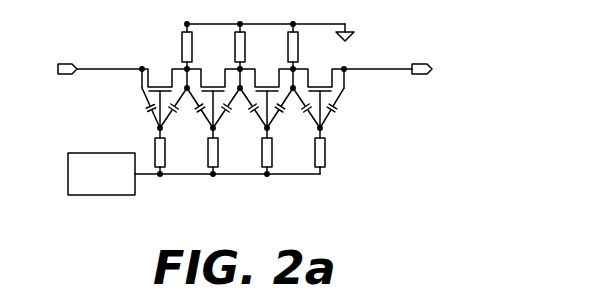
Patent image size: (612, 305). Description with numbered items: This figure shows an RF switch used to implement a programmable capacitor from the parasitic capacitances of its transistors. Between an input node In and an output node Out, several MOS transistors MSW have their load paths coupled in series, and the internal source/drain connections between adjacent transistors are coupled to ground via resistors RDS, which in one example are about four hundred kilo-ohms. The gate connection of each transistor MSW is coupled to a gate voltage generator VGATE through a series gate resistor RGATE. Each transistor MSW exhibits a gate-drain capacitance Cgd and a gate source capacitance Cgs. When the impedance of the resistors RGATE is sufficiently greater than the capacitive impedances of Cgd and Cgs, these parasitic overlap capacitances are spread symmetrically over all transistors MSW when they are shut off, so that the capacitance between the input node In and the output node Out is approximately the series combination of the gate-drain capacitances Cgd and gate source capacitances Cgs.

The input node In is at (89, 69).
The output node Out is at (404, 69).
The resistors RDS is at (222, 46).
The MOS transistors MSW is at (218, 98).
The gate-drain capacitances Cgd is at (211, 108).
The gate source capacitances Cgs is at (263, 112).
The series gate resistors RGATE is at (264, 151).
The gate voltage generator VGATE is at (101, 174).